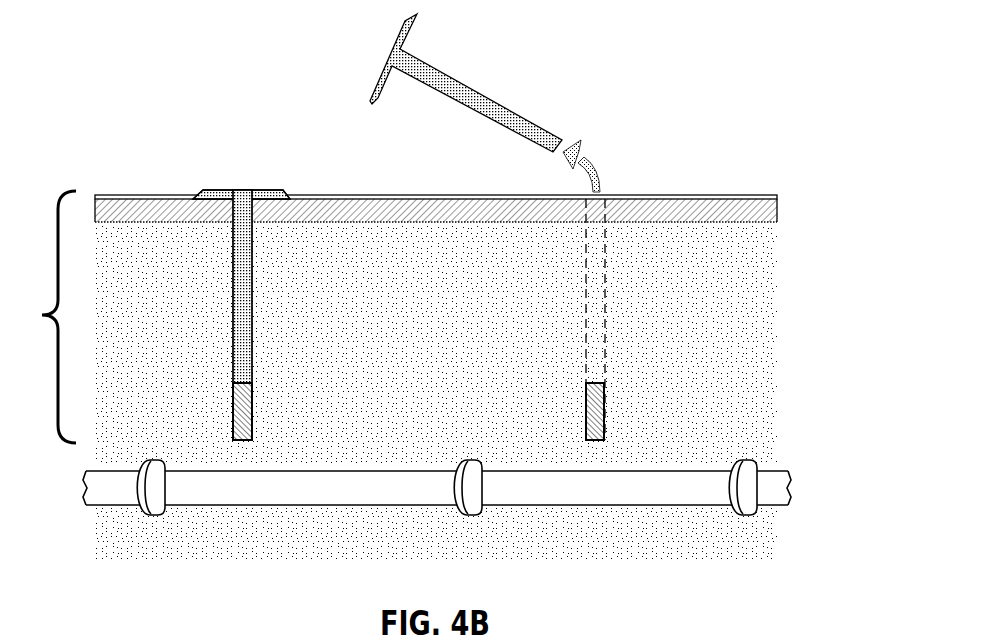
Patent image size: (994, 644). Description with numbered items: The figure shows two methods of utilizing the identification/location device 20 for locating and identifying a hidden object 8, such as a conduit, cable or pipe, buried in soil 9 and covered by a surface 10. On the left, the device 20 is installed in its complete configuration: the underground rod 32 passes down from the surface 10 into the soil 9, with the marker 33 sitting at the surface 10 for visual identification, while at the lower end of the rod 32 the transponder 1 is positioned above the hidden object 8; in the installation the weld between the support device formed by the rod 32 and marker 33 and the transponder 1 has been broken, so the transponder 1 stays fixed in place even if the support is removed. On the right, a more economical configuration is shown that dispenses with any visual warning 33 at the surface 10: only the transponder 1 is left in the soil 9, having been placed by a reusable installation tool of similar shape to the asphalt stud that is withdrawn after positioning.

The transponder 1 is at (240, 407).
The hidden object 8 is at (620, 498).
The soil 9 is at (692, 423).
The surface 10 is at (750, 197).
The identification/location device 20 is at (42, 317).
The underground rod 32 is at (245, 285).
The marker 33 is at (258, 192).